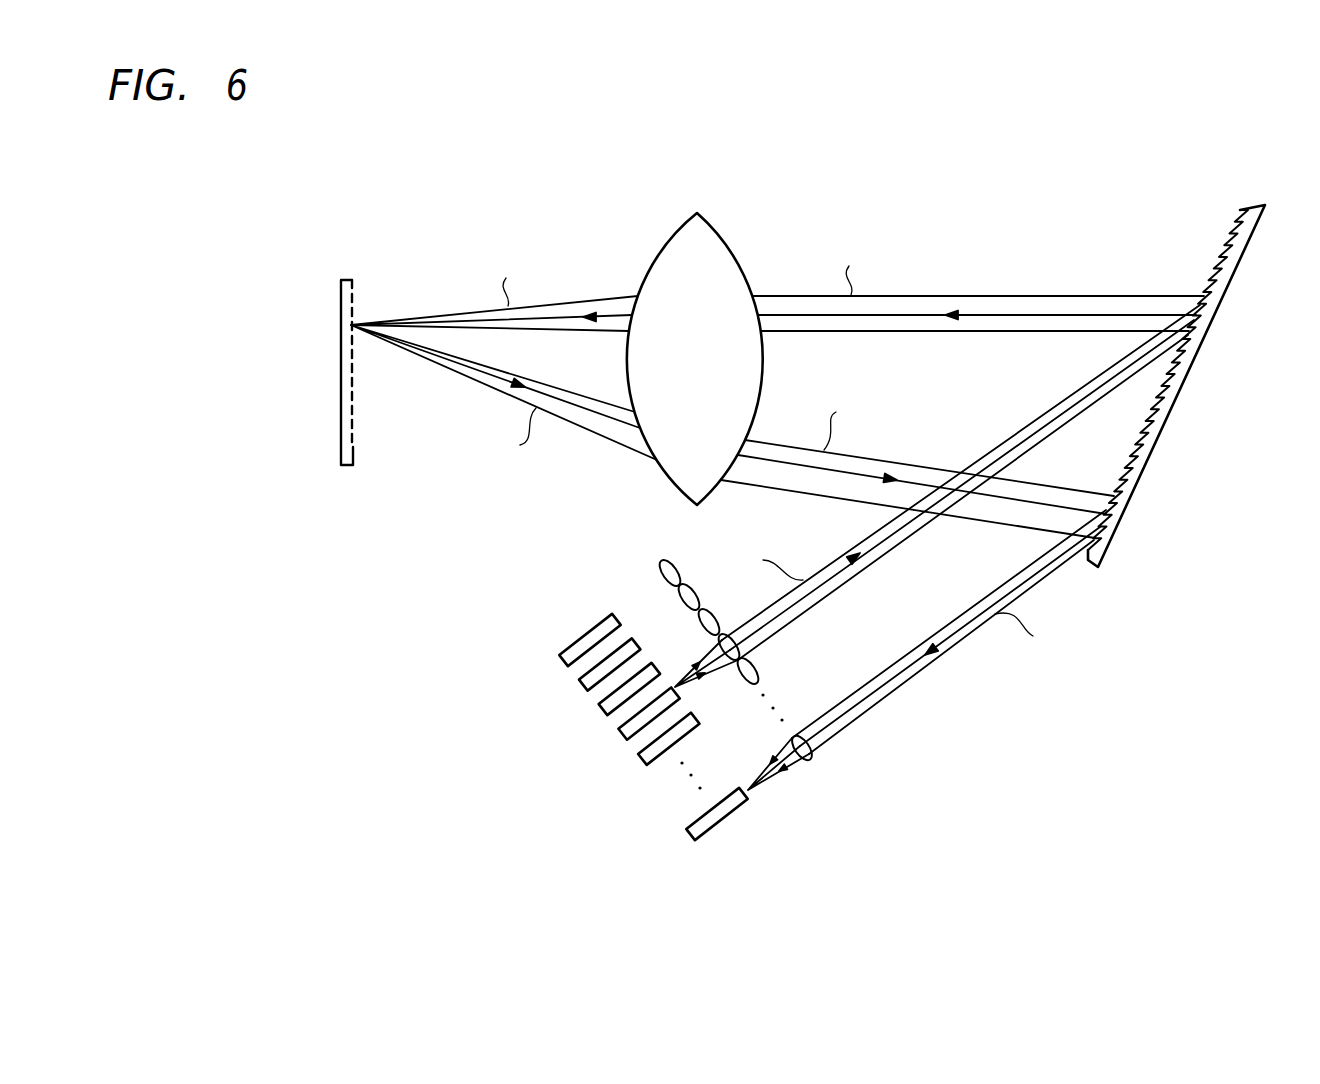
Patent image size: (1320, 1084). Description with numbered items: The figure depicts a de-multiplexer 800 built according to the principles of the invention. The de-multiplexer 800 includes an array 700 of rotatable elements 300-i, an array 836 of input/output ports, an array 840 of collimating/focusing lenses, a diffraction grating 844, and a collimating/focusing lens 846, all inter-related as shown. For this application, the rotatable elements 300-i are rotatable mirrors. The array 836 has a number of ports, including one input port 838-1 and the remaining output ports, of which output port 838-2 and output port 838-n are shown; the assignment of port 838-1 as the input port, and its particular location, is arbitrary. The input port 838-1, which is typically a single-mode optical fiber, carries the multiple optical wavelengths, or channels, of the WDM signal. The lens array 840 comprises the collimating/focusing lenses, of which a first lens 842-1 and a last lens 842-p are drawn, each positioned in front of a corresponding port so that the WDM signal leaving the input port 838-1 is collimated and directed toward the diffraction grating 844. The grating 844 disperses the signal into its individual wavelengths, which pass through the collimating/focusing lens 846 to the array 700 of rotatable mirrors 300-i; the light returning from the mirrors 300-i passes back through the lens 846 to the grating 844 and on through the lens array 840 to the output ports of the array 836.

The de-multiplexer 800 is at (480, 155).
The array of rotatable elements 700 is at (315, 262).
The rotatable element 300-i is at (355, 453).
The collimating/focusing lens 846 is at (704, 219).
The diffraction grating 844 is at (1265, 200).
The array of input/output ports 836 is at (632, 840).
The input port 838-1 is at (615, 731).
The output port 838-2 is at (562, 656).
The output port 838-n is at (712, 834).
The array of collimating/focusing lenses 840 is at (802, 816).
The collimating/focusing lens 842-1 is at (658, 566).
The collimating/focusing lens 842-p is at (812, 756).